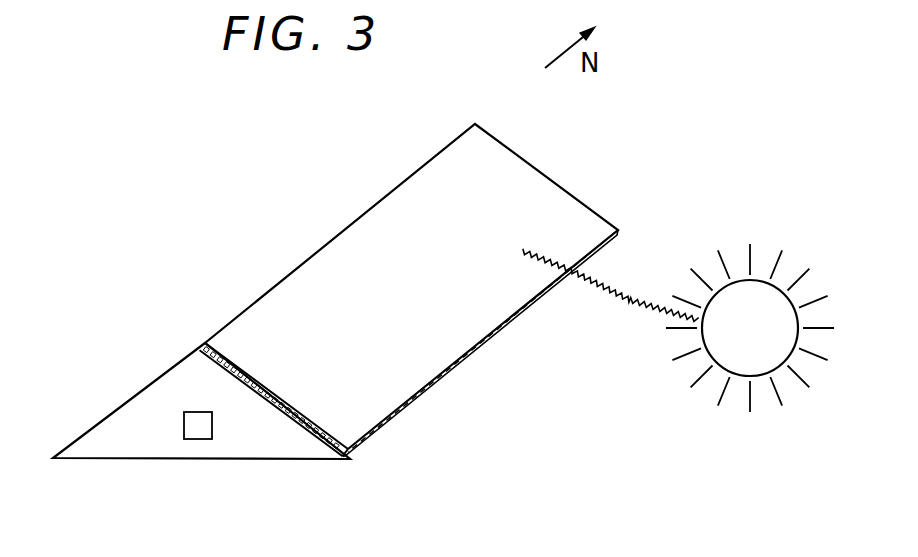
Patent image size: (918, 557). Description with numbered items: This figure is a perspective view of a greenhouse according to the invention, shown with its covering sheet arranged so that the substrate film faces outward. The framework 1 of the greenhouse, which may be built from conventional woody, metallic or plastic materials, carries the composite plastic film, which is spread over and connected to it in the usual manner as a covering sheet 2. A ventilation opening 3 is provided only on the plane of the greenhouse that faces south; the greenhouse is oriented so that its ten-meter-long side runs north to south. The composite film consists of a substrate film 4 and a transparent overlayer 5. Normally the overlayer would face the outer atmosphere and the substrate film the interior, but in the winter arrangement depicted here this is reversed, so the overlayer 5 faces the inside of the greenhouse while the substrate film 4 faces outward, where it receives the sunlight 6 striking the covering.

The framework of the greenhouse 1 is at (123, 407).
The solar collector panel 2 is at (335, 260).
The ventilation opening 3 is at (192, 433).
The substrate film 4 is at (208, 340).
The transparent overlayer 5 is at (205, 350).
The sunlight rays 6 is at (607, 292).